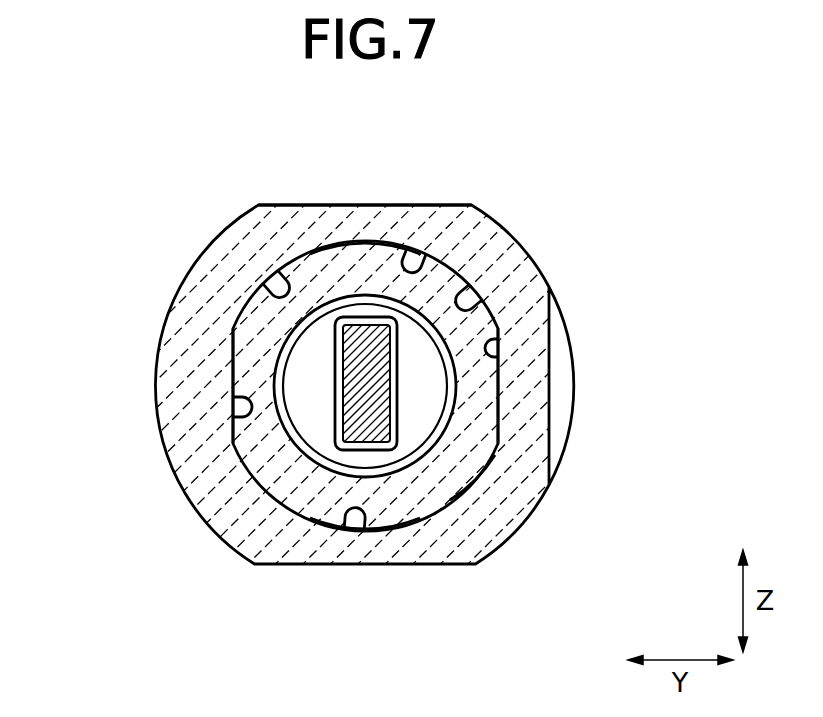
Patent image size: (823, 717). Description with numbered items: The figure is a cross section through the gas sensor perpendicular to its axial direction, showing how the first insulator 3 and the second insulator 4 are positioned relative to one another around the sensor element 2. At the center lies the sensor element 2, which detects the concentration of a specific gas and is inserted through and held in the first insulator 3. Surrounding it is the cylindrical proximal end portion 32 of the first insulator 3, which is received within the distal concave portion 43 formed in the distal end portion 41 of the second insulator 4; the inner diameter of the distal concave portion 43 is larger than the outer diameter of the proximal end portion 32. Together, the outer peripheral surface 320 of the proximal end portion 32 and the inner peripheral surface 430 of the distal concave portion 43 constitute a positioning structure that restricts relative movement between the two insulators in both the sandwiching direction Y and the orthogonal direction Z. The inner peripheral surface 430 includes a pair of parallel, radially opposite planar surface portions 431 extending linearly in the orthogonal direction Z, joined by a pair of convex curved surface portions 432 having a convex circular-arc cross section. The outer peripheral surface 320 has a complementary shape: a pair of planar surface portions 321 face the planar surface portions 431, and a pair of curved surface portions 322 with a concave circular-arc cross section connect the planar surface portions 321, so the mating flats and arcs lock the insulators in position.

The sensor element 2 is at (367, 390).
The first insulator 3 is at (305, 500).
The second insulator 4 is at (533, 275).
The proximal end portion 32 is at (260, 437).
The distal end portion 41 is at (267, 237).
The distal concave portion 43 is at (462, 292).
The outer peripheral surface 320 is at (477, 483).
The planar surface portion 321 is at (231, 362).
The curved surface portion 322 is at (363, 240).
The inner peripheral surface 430 is at (262, 287).
The planar surface portion 431 is at (238, 420).
The convex curved surface portion 432 is at (434, 254).